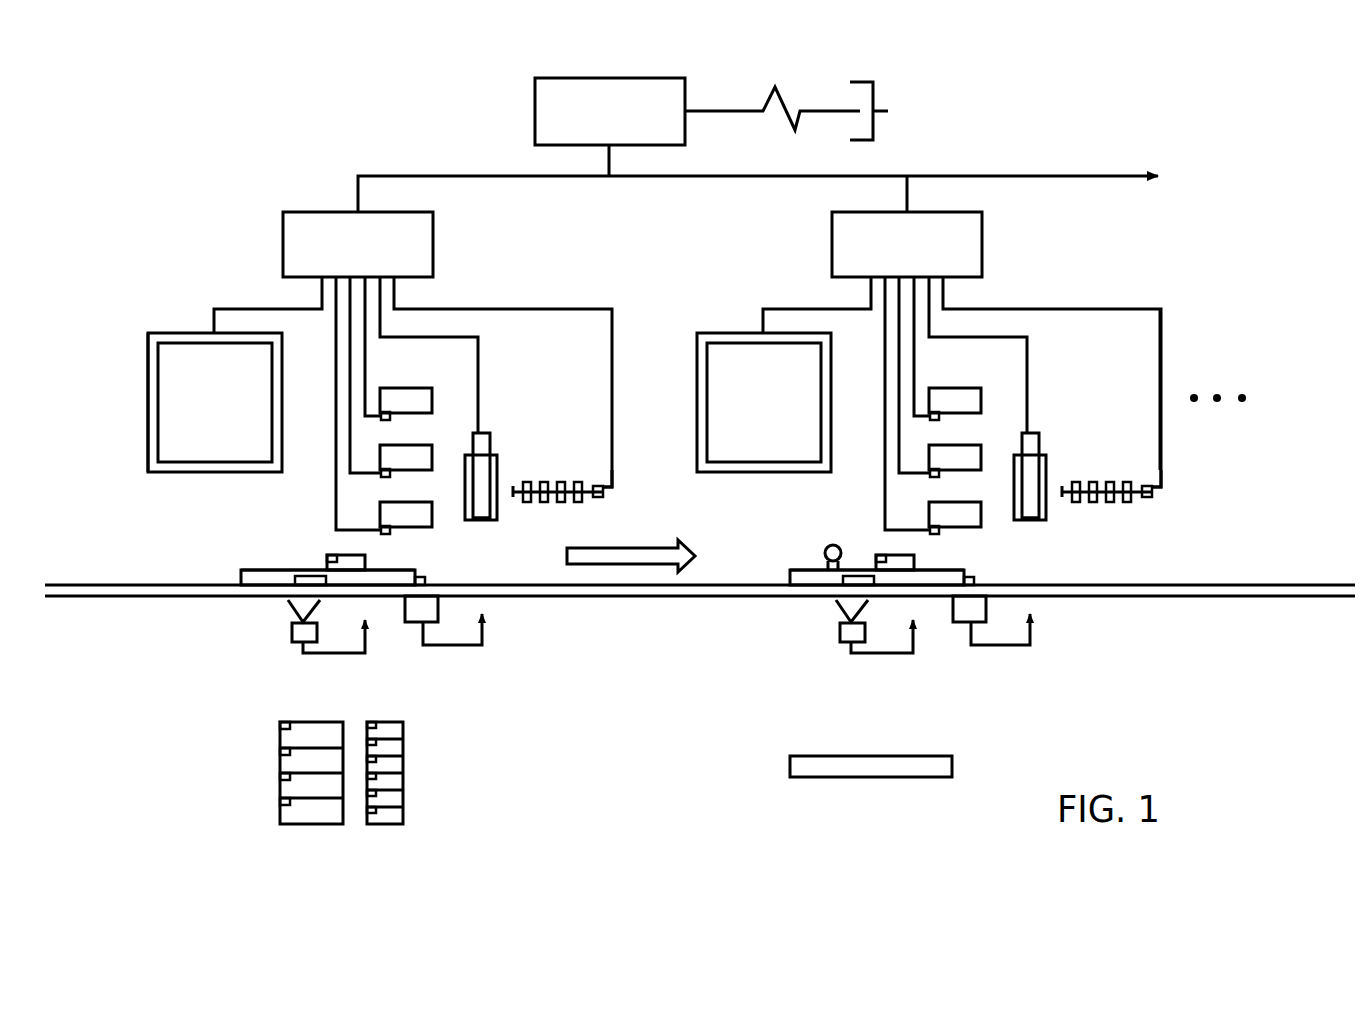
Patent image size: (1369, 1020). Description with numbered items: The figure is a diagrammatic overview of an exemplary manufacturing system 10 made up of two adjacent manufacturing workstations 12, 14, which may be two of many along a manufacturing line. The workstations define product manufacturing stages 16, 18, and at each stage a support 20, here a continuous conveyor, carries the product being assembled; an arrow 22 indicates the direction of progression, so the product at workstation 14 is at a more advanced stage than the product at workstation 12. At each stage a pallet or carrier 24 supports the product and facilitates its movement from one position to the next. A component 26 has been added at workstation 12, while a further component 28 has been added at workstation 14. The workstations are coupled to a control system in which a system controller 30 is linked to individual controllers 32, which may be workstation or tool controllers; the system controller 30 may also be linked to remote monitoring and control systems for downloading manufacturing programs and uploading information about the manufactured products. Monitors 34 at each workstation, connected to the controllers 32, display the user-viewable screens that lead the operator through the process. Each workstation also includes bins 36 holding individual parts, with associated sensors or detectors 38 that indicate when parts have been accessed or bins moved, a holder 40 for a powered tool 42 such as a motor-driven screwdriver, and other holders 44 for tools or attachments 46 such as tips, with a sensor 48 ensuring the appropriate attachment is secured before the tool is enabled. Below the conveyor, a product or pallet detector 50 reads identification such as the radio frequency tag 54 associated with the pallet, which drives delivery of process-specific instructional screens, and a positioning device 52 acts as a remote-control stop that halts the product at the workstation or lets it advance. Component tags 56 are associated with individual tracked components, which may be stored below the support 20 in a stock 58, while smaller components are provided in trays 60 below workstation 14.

The manufacturing system 10 is at (128, 183).
The manufacturing workstation 12 is at (128, 499).
The manufacturing workstation 14 is at (1164, 275).
The product manufacturing stage 16 is at (258, 570).
The product manufacturing stage 18 is at (807, 570).
The support 20 is at (527, 597).
The arrow 22 is at (645, 546).
The pallet or carrier 24 is at (250, 577).
The component 26 is at (365, 563).
The further component 28 is at (833, 545).
The system controller 30 is at (622, 78).
The controller 32 is at (433, 248).
The monitor 34 is at (215, 473).
The bin 36 is at (432, 515).
The sensor or detector 38 is at (389, 421).
The holder 40 is at (497, 505).
The powered tool 42 is at (480, 520).
The holder 44 is at (598, 498).
The tool or attachment 46 is at (578, 482).
The sensor 48 is at (600, 485).
The product or pallet detector 50 is at (292, 643).
The positioning device 52 is at (415, 623).
The radio frequency tag 54 is at (310, 576).
The component tag 56 is at (333, 557).
The stock 58 is at (452, 790).
The tray 60 is at (870, 778).